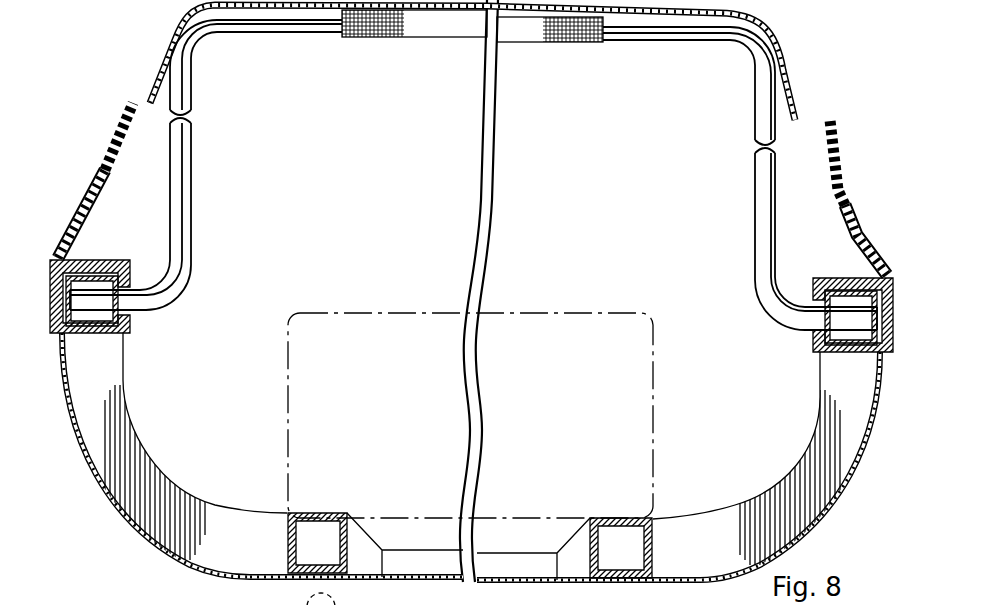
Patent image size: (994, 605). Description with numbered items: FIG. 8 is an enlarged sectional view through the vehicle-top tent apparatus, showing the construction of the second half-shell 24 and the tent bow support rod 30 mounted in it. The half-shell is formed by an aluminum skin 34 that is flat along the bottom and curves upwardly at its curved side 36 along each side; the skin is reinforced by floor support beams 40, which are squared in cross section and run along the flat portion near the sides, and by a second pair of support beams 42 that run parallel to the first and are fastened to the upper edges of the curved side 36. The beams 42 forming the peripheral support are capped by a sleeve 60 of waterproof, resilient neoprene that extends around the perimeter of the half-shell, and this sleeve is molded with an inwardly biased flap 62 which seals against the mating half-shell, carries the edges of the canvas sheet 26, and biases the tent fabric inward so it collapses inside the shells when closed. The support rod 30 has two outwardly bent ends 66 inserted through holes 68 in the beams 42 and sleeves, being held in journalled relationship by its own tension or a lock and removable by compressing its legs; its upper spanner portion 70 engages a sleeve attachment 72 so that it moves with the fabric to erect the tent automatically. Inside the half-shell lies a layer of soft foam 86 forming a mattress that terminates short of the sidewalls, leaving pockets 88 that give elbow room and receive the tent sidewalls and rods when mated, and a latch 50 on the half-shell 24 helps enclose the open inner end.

The second half-shell 24 is at (485, 469).
The sheet of canvas 26 is at (792, 98).
The tent bow support rod 30 is at (763, 165).
The skin 34 is at (540, 582).
The curved side 36 is at (128, 518).
The floor support beam 40 is at (312, 516).
The support beam 42 is at (88, 332).
The latch 50 is at (405, 604).
The sleeve 60 is at (50, 320).
The flap 62 is at (855, 212).
The outwardly bent end 66 is at (93, 300).
The hole 68 is at (807, 322).
The upper spanner portion 70 is at (673, 28).
The sleeve attachment 72 is at (438, 32).
The soft foam 86 is at (375, 313).
The pocket 88 is at (227, 449).